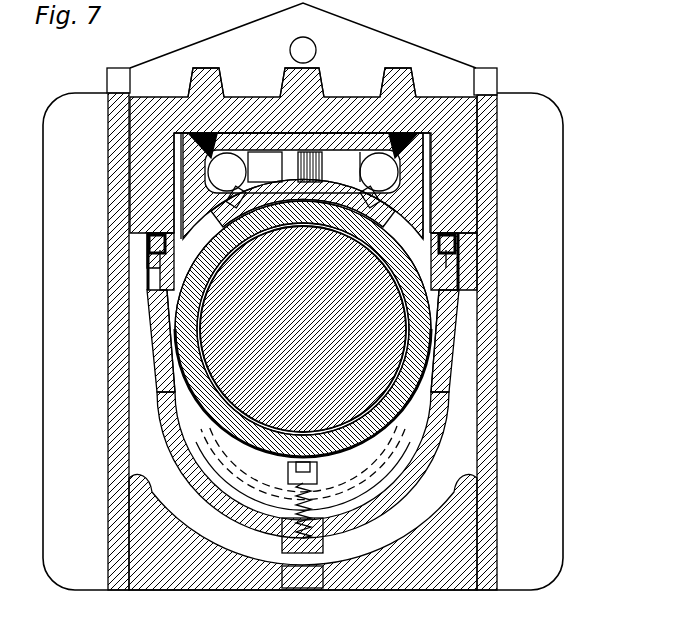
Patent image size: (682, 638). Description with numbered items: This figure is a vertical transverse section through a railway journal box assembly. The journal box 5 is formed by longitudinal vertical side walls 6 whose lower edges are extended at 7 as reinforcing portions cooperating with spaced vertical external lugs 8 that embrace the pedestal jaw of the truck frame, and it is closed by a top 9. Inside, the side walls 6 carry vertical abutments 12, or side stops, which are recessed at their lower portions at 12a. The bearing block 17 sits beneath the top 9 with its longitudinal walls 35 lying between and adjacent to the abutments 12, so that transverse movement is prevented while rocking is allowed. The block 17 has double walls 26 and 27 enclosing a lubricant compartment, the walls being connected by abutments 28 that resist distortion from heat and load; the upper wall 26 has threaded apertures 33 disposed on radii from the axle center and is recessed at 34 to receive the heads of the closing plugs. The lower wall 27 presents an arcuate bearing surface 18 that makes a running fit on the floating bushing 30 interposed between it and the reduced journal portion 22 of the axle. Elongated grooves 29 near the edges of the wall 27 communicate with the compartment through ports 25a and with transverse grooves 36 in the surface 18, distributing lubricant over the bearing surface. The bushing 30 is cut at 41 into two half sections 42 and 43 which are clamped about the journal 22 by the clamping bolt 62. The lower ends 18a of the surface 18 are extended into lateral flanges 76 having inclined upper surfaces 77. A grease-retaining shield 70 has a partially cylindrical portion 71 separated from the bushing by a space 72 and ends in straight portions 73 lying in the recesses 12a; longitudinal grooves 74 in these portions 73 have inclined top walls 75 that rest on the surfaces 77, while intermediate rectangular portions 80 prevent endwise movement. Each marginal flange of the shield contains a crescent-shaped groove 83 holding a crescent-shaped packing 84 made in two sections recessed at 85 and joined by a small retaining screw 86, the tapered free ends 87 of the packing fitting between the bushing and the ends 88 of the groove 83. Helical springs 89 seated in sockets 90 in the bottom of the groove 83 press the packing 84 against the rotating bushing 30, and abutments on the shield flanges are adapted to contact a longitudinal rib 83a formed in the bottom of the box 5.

The journal box 5 is at (497, 95).
The side walls 6 is at (108, 391).
The extended lower edges 7 is at (112, 564).
The vertical external lugs 8 is at (43, 254).
The top 9 is at (310, 107).
The vertical abutments 12 is at (122, 173).
The recesses 12a is at (505, 213).
The bearing block 17 is at (283, 150).
The arcuate bearing surface 18 is at (248, 264).
The lower ends of bearing surface 18a is at (211, 282).
The reduced portion of axle 22 is at (303, 329).
The ports 25a is at (488, 132).
The upper wall 26 is at (287, 176).
The lower wall 27 is at (329, 167).
The abutments 28 is at (280, 218).
The elongated grooves 29 is at (227, 172).
The floating bushing 30 is at (222, 285).
The threaded apertures 33 is at (230, 130).
The recesses 34 is at (195, 135).
The longitudinal walls 35 is at (187, 192).
The transverse grooves 36 is at (265, 167).
The bushing cut 41 is at (210, 346).
The bushing half section 42 is at (331, 200).
The bushing half section 43 is at (291, 460).
The clamping bolt 62 is at (379, 172).
The protecting shield 70 is at (460, 393).
The partially cylindrical portion 71 is at (408, 478).
The space 72 is at (330, 507).
The straight portions 73 is at (147, 262).
The longitudinal grooves 74 is at (147, 288).
The inclined top walls 75 is at (147, 268).
The lateral flanges 76 is at (147, 275).
The inclined upper surfaces 77 is at (170, 226).
The intermediate rectangular portions 80 is at (478, 240).
The crescent-shaped groove 83 is at (360, 498).
The longitudinal rib 83a is at (307, 578).
The crescent-shaped packing 84 is at (240, 462).
The complemental recesses 85 is at (303, 456).
The retaining screw 86 is at (327, 440).
The tapered free ends 87 is at (163, 377).
The groove ends 88 is at (163, 357).
The helical springs 89 is at (285, 520).
The sockets 90 is at (310, 535).